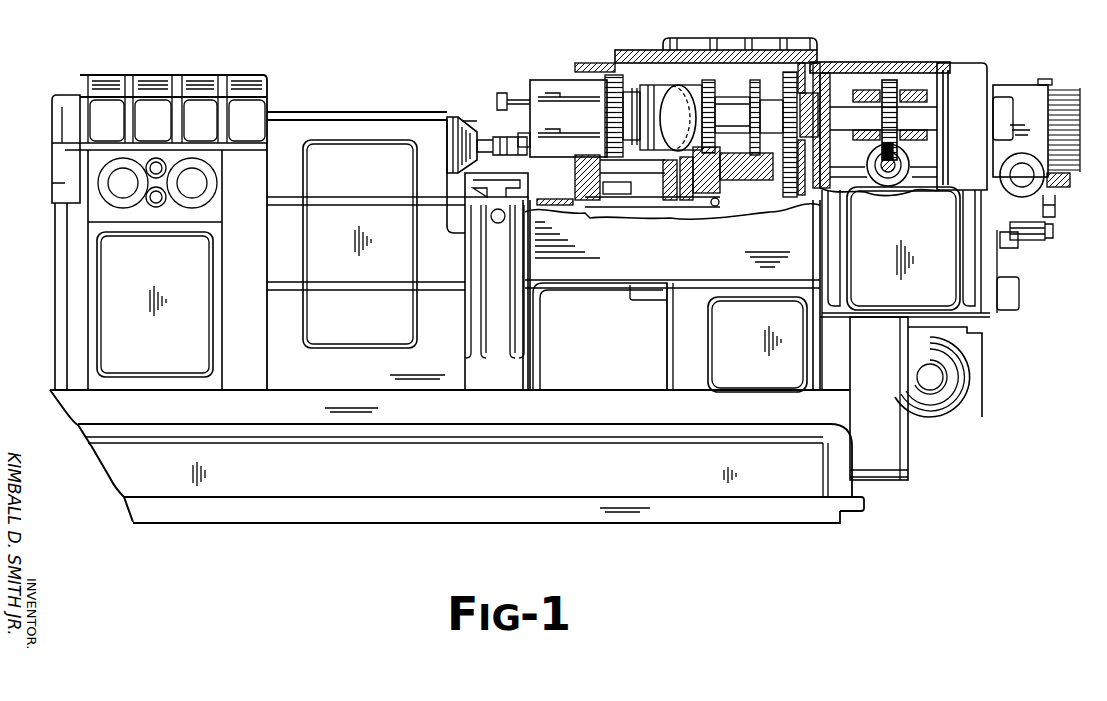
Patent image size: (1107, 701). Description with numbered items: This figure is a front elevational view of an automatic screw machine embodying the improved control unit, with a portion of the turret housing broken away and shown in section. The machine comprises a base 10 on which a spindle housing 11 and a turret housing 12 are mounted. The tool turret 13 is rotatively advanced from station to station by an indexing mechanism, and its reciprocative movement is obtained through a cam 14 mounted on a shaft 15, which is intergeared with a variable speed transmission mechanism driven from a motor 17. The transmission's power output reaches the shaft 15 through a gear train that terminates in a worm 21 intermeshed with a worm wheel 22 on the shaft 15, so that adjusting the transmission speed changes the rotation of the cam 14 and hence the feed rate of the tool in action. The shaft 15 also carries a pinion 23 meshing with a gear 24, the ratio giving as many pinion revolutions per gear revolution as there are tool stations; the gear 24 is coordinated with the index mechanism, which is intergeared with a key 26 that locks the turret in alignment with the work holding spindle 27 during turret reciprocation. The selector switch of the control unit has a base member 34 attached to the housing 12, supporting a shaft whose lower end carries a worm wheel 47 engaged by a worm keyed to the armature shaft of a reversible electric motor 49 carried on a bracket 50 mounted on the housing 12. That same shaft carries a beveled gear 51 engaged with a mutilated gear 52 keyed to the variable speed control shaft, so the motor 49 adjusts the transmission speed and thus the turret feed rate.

The base 10 is at (470, 511).
The spindle housing 11 is at (358, 128).
The turret housing 12 is at (620, 53).
The tool turret 13 is at (530, 67).
The cam 14 is at (680, 93).
The shaft 15 is at (720, 110).
The motor 17 is at (947, 397).
The worm 21 is at (907, 183).
The worm wheel 22 is at (887, 83).
The pinion 23 is at (809, 115).
The gear 24 is at (787, 185).
The key 26 is at (578, 160).
The work holding spindle 27 is at (477, 127).
The base member 34 is at (1030, 88).
The worm wheel 47 is at (1068, 180).
The electric motor 49 is at (1013, 243).
The bracket 50 is at (1003, 253).
The beveled gear 51 is at (1053, 210).
The mutilated gear 52 is at (1050, 230).